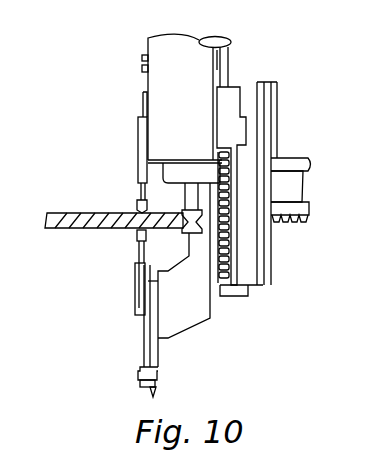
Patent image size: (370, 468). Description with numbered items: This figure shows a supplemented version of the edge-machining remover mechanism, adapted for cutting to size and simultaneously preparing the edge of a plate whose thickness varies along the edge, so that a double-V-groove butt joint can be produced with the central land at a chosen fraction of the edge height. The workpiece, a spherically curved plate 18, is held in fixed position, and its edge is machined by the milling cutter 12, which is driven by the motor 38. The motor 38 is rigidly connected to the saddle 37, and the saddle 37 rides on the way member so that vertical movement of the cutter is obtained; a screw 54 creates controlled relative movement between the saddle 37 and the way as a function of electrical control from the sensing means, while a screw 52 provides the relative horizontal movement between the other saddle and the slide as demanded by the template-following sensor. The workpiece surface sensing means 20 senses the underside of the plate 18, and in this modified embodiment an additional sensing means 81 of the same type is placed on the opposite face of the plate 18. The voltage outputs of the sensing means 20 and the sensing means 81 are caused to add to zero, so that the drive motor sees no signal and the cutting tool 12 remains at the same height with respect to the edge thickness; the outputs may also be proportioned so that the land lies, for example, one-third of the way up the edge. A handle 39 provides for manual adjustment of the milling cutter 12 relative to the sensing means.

The motor 38 is at (194, 94).
The saddle 37 is at (234, 88).
The screw 52 is at (292, 223).
The screw 54 is at (221, 282).
The additional sensing means 81 is at (137, 203).
The spherically curved plate 18 is at (66, 212).
The workpiece surface sensing means 20 is at (137, 232).
The milling cutter 12 is at (183, 232).
The handle 39 is at (157, 391).